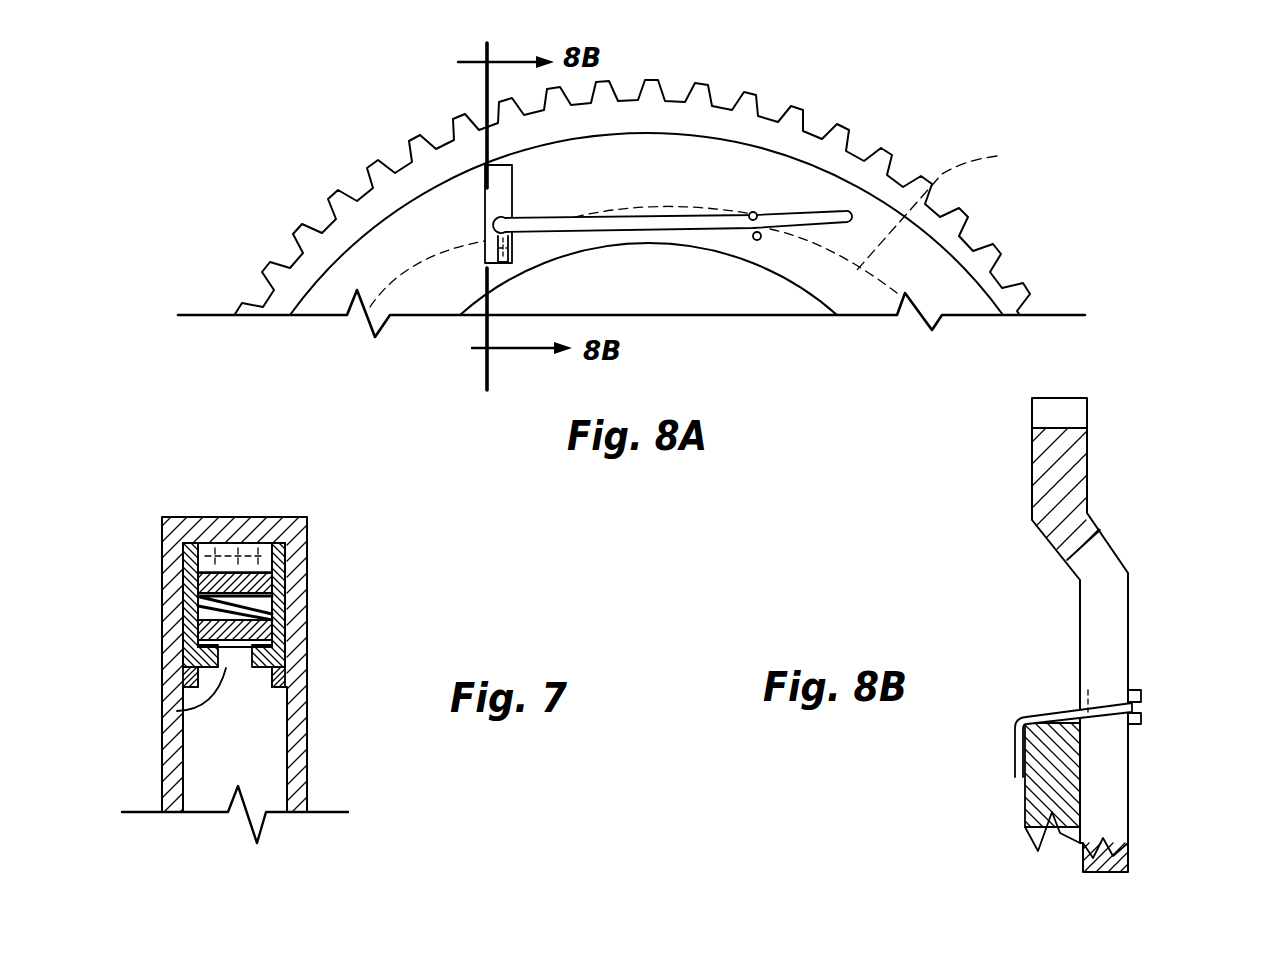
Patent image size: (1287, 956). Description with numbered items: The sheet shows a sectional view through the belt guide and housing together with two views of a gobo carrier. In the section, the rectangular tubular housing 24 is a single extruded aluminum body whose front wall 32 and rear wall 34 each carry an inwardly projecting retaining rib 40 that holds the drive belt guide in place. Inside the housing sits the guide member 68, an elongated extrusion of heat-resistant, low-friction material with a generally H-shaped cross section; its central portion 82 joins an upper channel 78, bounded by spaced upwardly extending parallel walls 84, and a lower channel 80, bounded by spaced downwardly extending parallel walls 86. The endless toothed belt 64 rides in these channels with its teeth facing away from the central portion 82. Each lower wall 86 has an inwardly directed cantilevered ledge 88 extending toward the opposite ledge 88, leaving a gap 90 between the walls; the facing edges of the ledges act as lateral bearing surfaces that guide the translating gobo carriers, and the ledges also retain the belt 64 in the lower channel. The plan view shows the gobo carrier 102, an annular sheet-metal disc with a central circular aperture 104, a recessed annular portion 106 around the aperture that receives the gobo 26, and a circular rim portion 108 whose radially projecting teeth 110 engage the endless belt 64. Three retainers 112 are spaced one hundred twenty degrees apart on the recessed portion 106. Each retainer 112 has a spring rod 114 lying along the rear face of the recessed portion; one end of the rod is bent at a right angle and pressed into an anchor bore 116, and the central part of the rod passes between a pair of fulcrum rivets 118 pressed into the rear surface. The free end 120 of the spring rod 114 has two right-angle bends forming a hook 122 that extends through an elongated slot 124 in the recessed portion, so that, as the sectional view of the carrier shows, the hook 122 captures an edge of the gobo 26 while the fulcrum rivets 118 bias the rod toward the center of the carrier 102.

In FIG. 7, the rectangular tubular housing 24 is at (202, 486).
In FIG. 8A, the gobo 26 is at (941, 206).
In FIG. 8B, the gobo 26 is at (1026, 804).
In FIG. 7, the front wall 32 is at (311, 752).
In FIG. 7, the rear wall 34 is at (166, 772).
In FIG. 7, the retaining rib 40 is at (195, 680).
In FIG. 7, the endless toothed belt 64 is at (258, 553).
In FIG. 7, the guide member 68 is at (268, 545).
In FIG. 7, the upper channel 78 is at (242, 572).
In FIG. 7, the lower channel 80 is at (299, 633).
In FIG. 7, the central portion 82 is at (288, 593).
In FIG. 7, the upwardly extending parallel walls 84 is at (182, 556).
In FIG. 7, the downwardly extending parallel walls 86 is at (184, 617).
In FIG. 7, the ledge 88 is at (186, 657).
In FIG. 7, the gap 90 is at (177, 711).
In FIG. 8A, the gobo carrier 102 is at (1066, 122).
In FIG. 8A, the central circular aperture 104 is at (720, 257).
In FIG. 8A, the recessed annular portion 106 is at (853, 190).
In FIG. 8B, the recessed annular portion 106 is at (1131, 582).
In FIG. 8A, the circular rim portion 108 is at (730, 125).
In FIG. 8B, the circular rim portion 108 is at (1032, 475).
In FIG. 8A, the teeth 110 is at (998, 210).
In FIG. 8B, the teeth 110 is at (1044, 419).
In FIG. 8A, the retainer 112 is at (579, 207).
In FIG. 8B, the retainer 112 is at (1003, 698).
In FIG. 8A, the spring rod 114 is at (623, 229).
In FIG. 8B, the spring rod 114 is at (1141, 703).
In FIG. 8A, the anchor bore 116 is at (750, 214).
In FIG. 8B, the anchor bore 116 is at (1088, 706).
In FIG. 8B, the fulcrum posts or rivets 118 is at (1137, 690).
In FIG. 8A, the free end 120 is at (495, 212).
In FIG. 8B, the free end 120 is at (1060, 712).
In FIG. 8A, the hook 122 is at (512, 262).
In FIG. 8B, the hook 122 is at (1017, 769).
In FIG. 8A, the elongated slot 124 is at (503, 197).
In FIG. 8B, the elongated slot 124 is at (1112, 790).